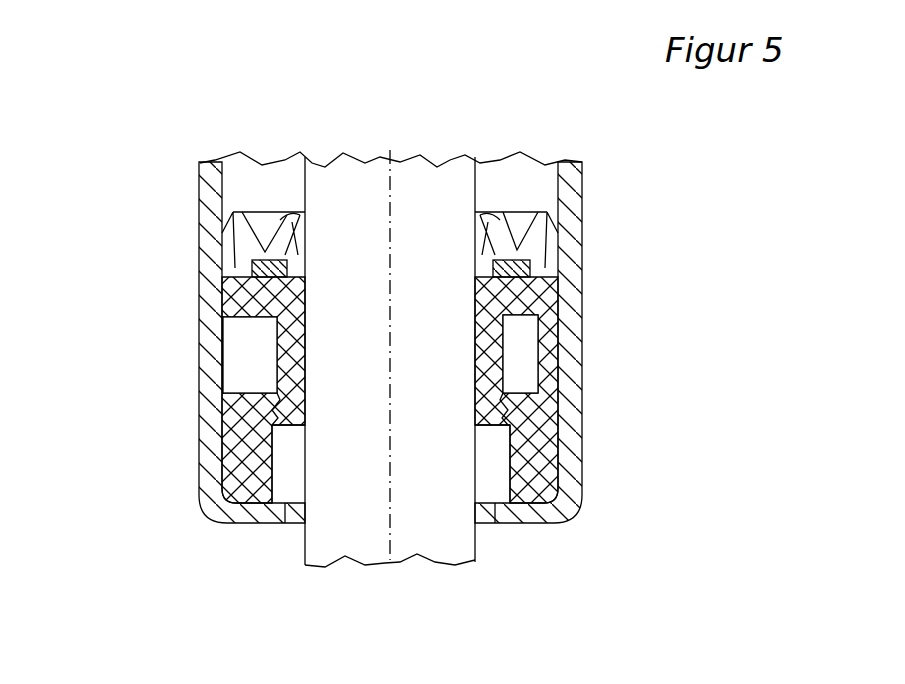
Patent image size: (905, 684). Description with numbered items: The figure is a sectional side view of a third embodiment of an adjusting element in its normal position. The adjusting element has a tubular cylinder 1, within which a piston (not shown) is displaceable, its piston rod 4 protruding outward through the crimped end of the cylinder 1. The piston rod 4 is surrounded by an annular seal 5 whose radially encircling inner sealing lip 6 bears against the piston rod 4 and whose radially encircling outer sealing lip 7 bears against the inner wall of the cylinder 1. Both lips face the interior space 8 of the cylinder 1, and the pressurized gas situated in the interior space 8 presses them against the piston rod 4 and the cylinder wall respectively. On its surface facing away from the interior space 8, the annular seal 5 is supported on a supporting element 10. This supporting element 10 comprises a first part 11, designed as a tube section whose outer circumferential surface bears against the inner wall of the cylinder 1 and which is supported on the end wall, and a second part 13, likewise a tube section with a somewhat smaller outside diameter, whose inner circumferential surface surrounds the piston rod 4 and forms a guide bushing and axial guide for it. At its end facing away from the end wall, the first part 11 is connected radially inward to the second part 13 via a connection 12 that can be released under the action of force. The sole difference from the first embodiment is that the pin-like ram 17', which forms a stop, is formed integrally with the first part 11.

The tubular cylinder 1 is at (573, 418).
The piston rod 4 is at (425, 537).
The annular seal 5 is at (605, 240).
The inner sealing lip 6 is at (293, 245).
The outer sealing lip 7 is at (245, 230).
The interior space 8 is at (519, 182).
The supporting element 10 is at (163, 390).
The first part 11 is at (240, 462).
The connection 12 is at (262, 388).
The second part 13 is at (293, 357).
The pin-like ram 17' is at (642, 348).